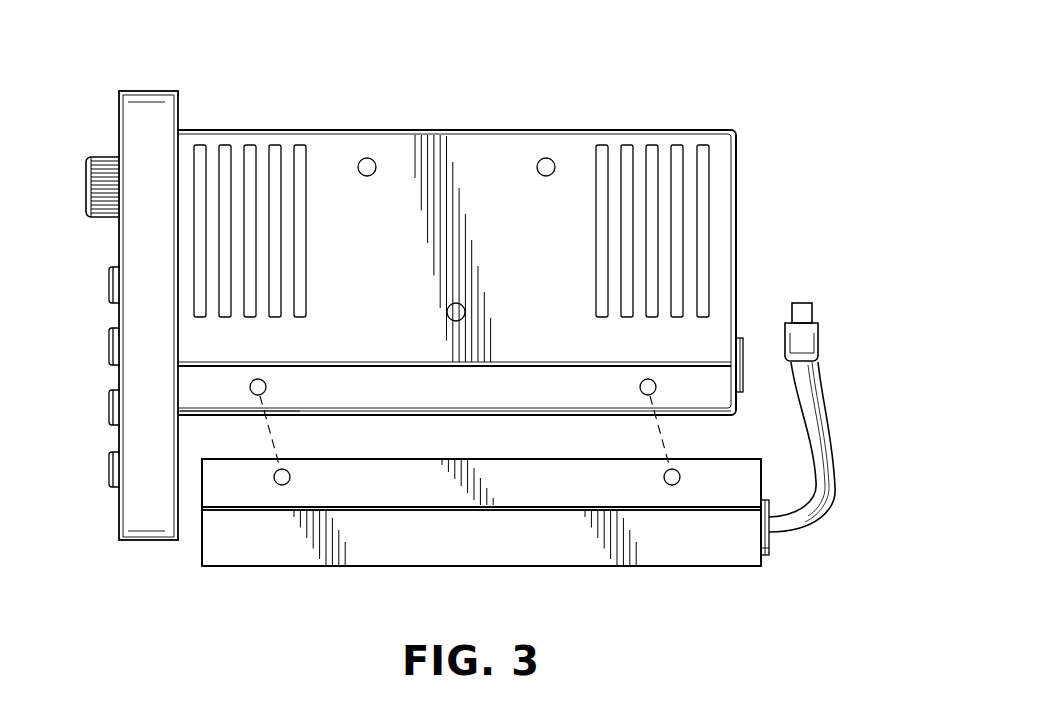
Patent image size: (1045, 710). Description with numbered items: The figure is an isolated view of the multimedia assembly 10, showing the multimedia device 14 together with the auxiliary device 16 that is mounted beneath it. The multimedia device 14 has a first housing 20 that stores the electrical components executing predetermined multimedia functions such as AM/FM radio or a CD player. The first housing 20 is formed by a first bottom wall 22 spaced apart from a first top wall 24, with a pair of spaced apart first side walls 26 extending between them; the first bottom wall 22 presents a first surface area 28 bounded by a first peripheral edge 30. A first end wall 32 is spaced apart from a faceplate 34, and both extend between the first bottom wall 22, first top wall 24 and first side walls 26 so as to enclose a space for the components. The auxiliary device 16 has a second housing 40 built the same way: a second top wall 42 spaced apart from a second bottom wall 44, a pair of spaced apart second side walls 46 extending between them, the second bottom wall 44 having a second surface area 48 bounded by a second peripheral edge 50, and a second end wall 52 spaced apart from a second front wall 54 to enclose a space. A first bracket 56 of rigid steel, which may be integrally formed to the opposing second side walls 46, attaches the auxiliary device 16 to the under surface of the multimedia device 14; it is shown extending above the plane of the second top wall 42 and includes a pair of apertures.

The multimedia assembly 10 is at (790, 101).
The multimedia device 14 is at (745, 166).
The auxiliary device 16 is at (766, 559).
The first housing 20 is at (503, 106).
The first bottom wall 22 is at (700, 416).
The first top wall 24 is at (556, 130).
The first side walls 26 is at (333, 145).
The first surface area 28 is at (450, 415).
The first peripheral edge 30 is at (186, 415).
The first end wall 32 is at (736, 243).
The faceplate 34 is at (150, 103).
The second housing 40 is at (384, 567).
The second top wall 42 is at (765, 500).
The second bottom wall 44 is at (602, 566).
The second side walls 46 is at (218, 548).
The second surface area 48 is at (288, 566).
The second peripheral edge 50 is at (202, 568).
The second end wall 52 is at (769, 548).
The second front wall 54 is at (200, 535).
The first bracket 56 is at (577, 494).